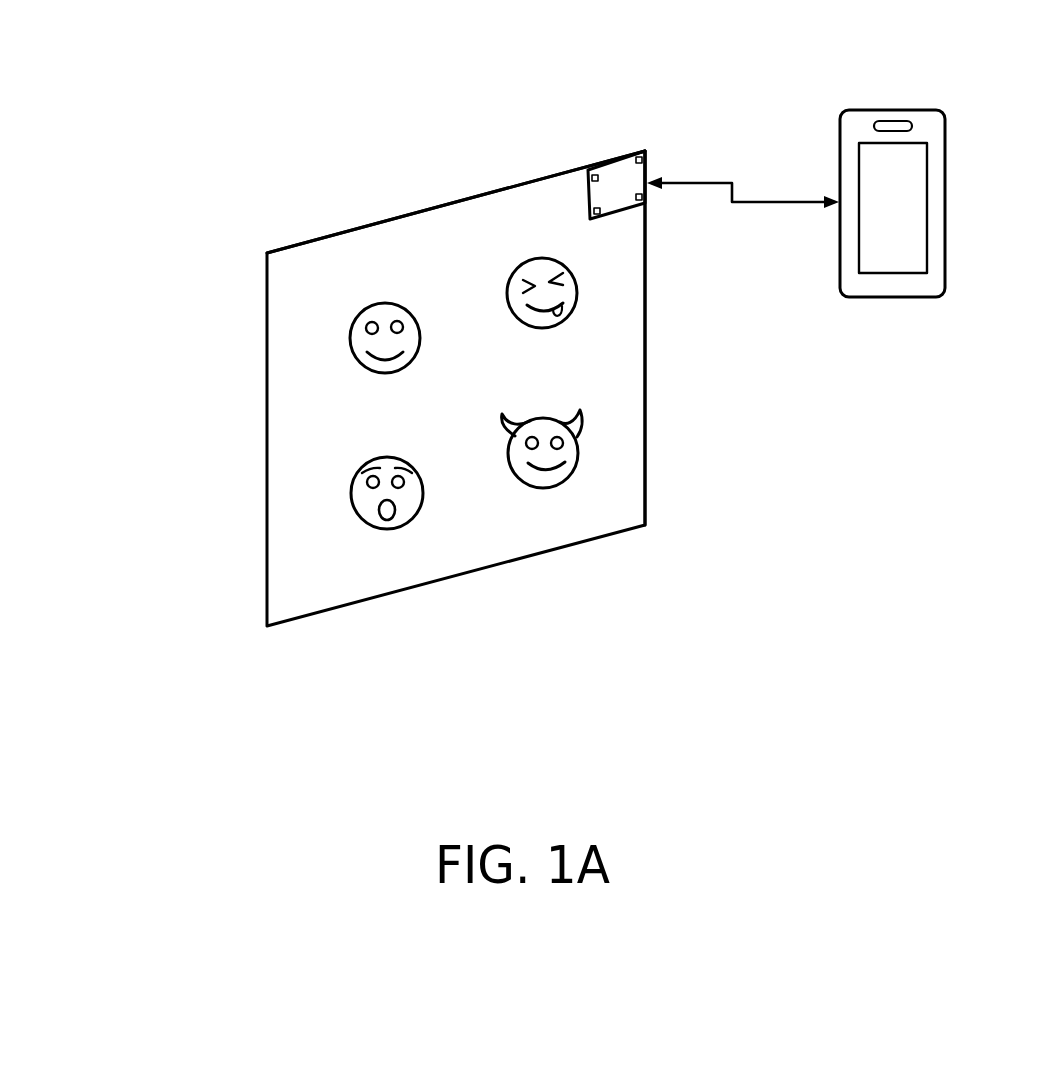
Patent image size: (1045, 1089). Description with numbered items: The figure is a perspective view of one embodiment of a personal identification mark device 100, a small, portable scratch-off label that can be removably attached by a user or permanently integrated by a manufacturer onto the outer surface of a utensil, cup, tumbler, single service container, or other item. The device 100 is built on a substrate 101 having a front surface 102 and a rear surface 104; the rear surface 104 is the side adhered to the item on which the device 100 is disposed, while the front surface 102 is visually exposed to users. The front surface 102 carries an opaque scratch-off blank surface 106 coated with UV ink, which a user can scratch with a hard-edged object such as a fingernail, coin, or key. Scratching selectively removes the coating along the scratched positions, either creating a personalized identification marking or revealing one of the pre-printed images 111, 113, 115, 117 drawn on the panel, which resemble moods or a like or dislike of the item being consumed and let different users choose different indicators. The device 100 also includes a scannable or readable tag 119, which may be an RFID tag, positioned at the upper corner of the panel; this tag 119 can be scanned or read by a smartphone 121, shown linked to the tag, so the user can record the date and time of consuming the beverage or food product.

The personal identification mark device 100 is at (117, 229).
The substrate 101 is at (743, 178).
The front surface 102 is at (719, 338).
The rear surface 104 is at (456, 202).
The scratch-off blank surface 106 is at (379, 388).
The pre-printed image 111 is at (291, 340).
The pre-printed image 113 is at (655, 293).
The pre-printed image 115 is at (516, 574).
The pre-printed image 117 is at (710, 526).
The scannable or readable tag 119 is at (549, 169).
The smartphone 121 is at (871, 158).